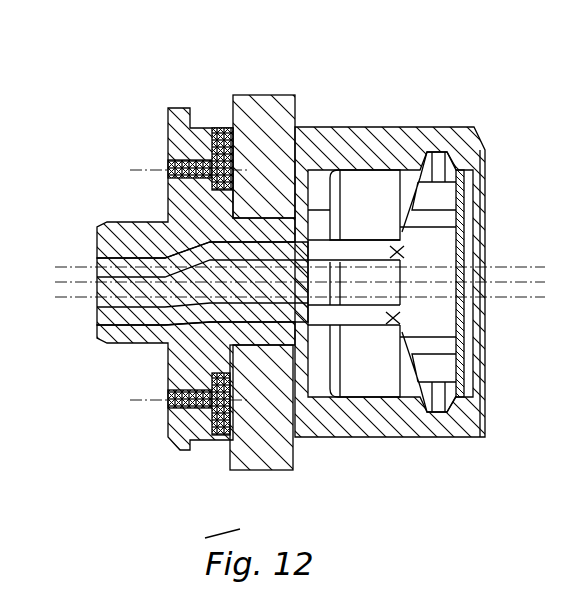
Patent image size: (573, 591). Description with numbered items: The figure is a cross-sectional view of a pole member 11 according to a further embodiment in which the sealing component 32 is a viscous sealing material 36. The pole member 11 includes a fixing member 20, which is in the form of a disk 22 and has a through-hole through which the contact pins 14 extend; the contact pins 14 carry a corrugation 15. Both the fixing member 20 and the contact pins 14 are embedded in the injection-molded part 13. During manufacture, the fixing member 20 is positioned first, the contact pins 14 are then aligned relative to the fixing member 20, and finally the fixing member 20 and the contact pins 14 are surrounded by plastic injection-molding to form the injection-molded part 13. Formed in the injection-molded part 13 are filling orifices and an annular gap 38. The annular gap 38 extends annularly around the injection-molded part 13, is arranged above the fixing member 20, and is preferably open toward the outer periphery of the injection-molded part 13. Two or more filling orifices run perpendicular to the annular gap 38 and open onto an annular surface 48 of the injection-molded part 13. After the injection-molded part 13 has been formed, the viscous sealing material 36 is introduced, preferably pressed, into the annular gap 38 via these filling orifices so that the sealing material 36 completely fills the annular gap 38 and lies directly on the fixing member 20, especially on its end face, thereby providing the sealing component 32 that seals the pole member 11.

The pole member 11 is at (470, 88).
The injection-molded part 13 is at (380, 423).
The contact pins 14 is at (395, 312).
The corrugation 15 is at (196, 296).
The fixing member 20 is at (270, 103).
The disk 22 is at (300, 249).
The sealing component 32 is at (170, 418).
The viscous sealing material 36 is at (213, 437).
The annular gap 38 is at (221, 130).
The annular surface 48 is at (160, 143).